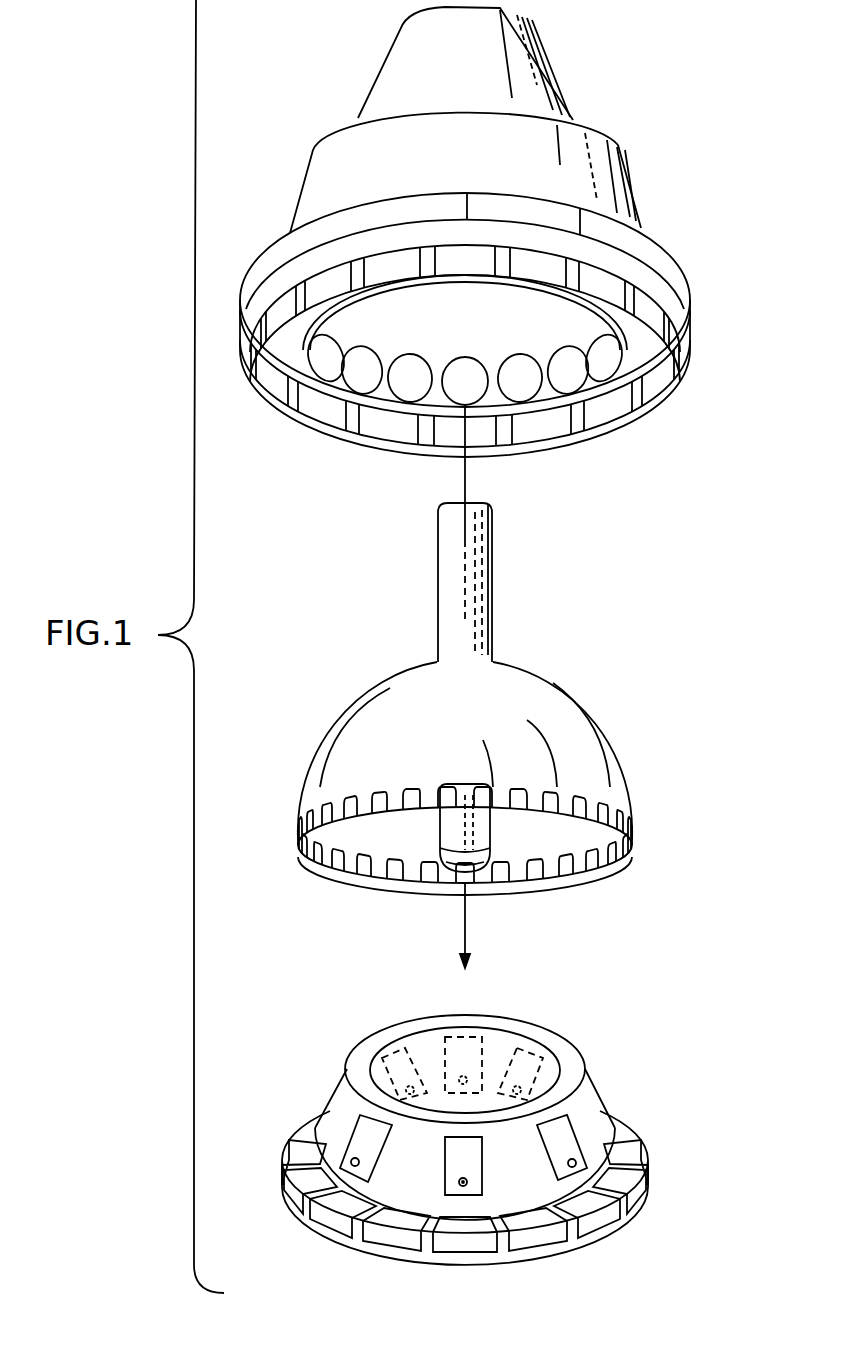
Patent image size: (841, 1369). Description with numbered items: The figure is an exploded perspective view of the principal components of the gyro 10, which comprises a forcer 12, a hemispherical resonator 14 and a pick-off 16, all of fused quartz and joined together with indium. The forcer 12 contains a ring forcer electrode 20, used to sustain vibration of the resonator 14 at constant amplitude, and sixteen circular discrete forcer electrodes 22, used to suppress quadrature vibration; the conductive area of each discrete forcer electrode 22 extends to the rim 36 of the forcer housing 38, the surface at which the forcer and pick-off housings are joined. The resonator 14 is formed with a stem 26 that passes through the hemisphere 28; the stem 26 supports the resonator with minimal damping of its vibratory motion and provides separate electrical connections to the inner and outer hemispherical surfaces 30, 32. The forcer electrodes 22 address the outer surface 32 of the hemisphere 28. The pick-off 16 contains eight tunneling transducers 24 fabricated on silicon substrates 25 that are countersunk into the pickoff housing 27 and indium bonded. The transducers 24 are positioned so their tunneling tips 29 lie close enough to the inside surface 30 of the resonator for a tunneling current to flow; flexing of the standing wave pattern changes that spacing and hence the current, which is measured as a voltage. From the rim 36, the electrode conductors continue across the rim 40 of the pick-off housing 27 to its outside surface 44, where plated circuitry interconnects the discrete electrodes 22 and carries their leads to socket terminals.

The gyro 10 is at (352, 45).
The forcer 12 is at (316, 158).
The forcer housing 38 is at (577, 152).
The ring forcer electrode 20 is at (518, 308).
The rim of the forcer housing 36 is at (648, 373).
The discrete forcer electrodes 22 is at (573, 373).
The stem 26 is at (453, 578).
The hemispherical resonator 14 is at (356, 712).
The hemisphere 28 is at (537, 703).
The outer hemispherical surface 32 is at (615, 748).
The inner hemispherical surface 30 is at (343, 838).
The pick-off 16 is at (245, 1094).
The pickoff housing 27 is at (363, 1058).
The silicon substrates 25 is at (563, 1143).
The tunneling transducers 24 is at (577, 1163).
The tunneling tips 29 is at (623, 1148).
The rim of the pick-off housing 40 is at (296, 1172).
The outside surface 44 is at (567, 1247).